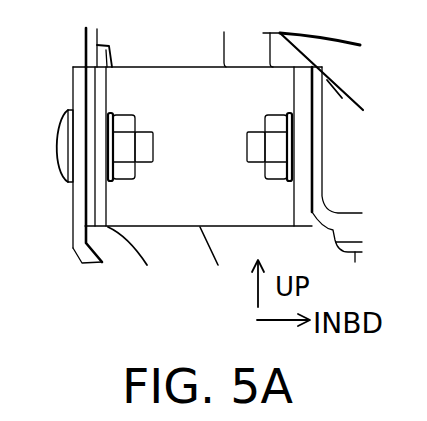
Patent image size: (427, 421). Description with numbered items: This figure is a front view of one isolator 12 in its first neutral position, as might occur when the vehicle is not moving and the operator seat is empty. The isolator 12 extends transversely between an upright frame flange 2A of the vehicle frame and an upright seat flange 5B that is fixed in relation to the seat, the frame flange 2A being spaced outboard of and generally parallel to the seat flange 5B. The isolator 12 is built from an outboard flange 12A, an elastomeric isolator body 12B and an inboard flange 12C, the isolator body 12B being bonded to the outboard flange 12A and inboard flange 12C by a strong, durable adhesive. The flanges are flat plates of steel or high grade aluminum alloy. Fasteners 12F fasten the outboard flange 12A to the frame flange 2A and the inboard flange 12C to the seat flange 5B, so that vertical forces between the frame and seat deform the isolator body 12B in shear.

The isolator 12 is at (214, 158).
The outboard flange 12A is at (97, 88).
The elastomeric isolator body 12B is at (162, 227).
The inboard flange 12C is at (303, 94).
The fastener 12F is at (64, 181).
The frame flange 2A is at (84, 263).
The seat flange 5B is at (328, 165).